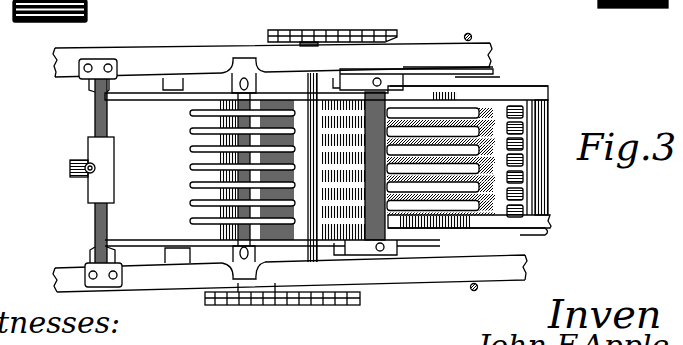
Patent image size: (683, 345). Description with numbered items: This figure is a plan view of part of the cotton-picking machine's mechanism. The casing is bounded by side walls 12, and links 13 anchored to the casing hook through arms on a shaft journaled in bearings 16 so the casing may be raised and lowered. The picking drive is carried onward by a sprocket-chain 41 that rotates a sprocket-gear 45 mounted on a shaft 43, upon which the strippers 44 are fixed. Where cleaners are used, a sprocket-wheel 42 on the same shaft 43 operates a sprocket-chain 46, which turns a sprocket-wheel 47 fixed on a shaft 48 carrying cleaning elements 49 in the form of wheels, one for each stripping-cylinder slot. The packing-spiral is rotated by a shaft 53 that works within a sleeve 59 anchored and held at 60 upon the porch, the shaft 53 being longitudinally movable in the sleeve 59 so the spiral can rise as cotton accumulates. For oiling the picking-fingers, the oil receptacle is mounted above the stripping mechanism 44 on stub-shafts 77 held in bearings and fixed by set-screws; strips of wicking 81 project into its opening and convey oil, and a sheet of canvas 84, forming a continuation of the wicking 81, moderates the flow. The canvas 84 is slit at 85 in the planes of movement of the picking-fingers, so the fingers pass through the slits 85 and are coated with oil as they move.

The side walls 12 is at (540, 236).
The links 13 is at (473, 288).
The bearings 16 is at (437, 120).
The sprocket-chain 41 is at (371, 73).
The sprocket-wheel 42 is at (334, 298).
The shaft 43 is at (313, 250).
The strippers 44 is at (343, 225).
The sprocket-gear 45 is at (324, 29).
The sprocket-chain 46 is at (281, 306).
The sprocket-wheel 47 is at (241, 292).
The shaft 48 is at (212, 231).
The cleaning elements 49 is at (191, 130).
The shaft 53 is at (88, 181).
The sleeve 59 is at (118, 164).
The anchoring points 60 is at (95, 121).
The stub-shafts 77 is at (394, 252).
The strips of wicking 81 is at (483, 98).
The sheet of canvas 84 is at (509, 116).
The slits 85 is at (497, 192).